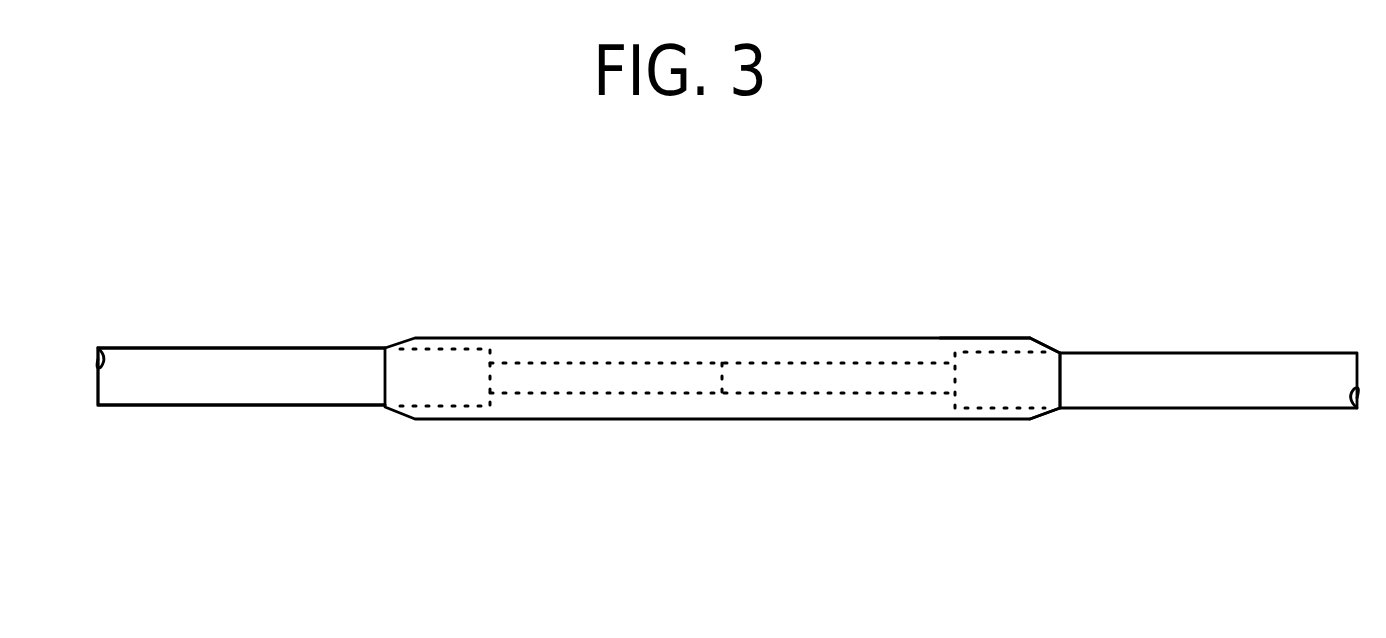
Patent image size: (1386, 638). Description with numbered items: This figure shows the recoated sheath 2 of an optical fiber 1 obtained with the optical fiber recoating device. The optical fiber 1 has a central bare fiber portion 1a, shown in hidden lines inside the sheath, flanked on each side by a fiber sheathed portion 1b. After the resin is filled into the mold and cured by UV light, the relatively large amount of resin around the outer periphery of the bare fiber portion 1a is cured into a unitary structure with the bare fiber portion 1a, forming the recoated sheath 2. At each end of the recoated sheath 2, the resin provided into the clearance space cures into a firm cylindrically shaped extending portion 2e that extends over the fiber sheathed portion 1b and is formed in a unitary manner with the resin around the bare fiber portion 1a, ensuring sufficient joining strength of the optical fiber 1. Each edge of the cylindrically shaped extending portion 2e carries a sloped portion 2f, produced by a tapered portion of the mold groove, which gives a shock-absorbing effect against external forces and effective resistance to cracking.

The optical fiber 1 is at (1164, 343).
The bare fiber portion 1a is at (777, 393).
The fiber sheathed portion 1b is at (203, 373).
The recoated sheath 2 is at (828, 338).
The cylindrically shaped extending portion 2e is at (977, 338).
The sloped portion 2f is at (1047, 343).